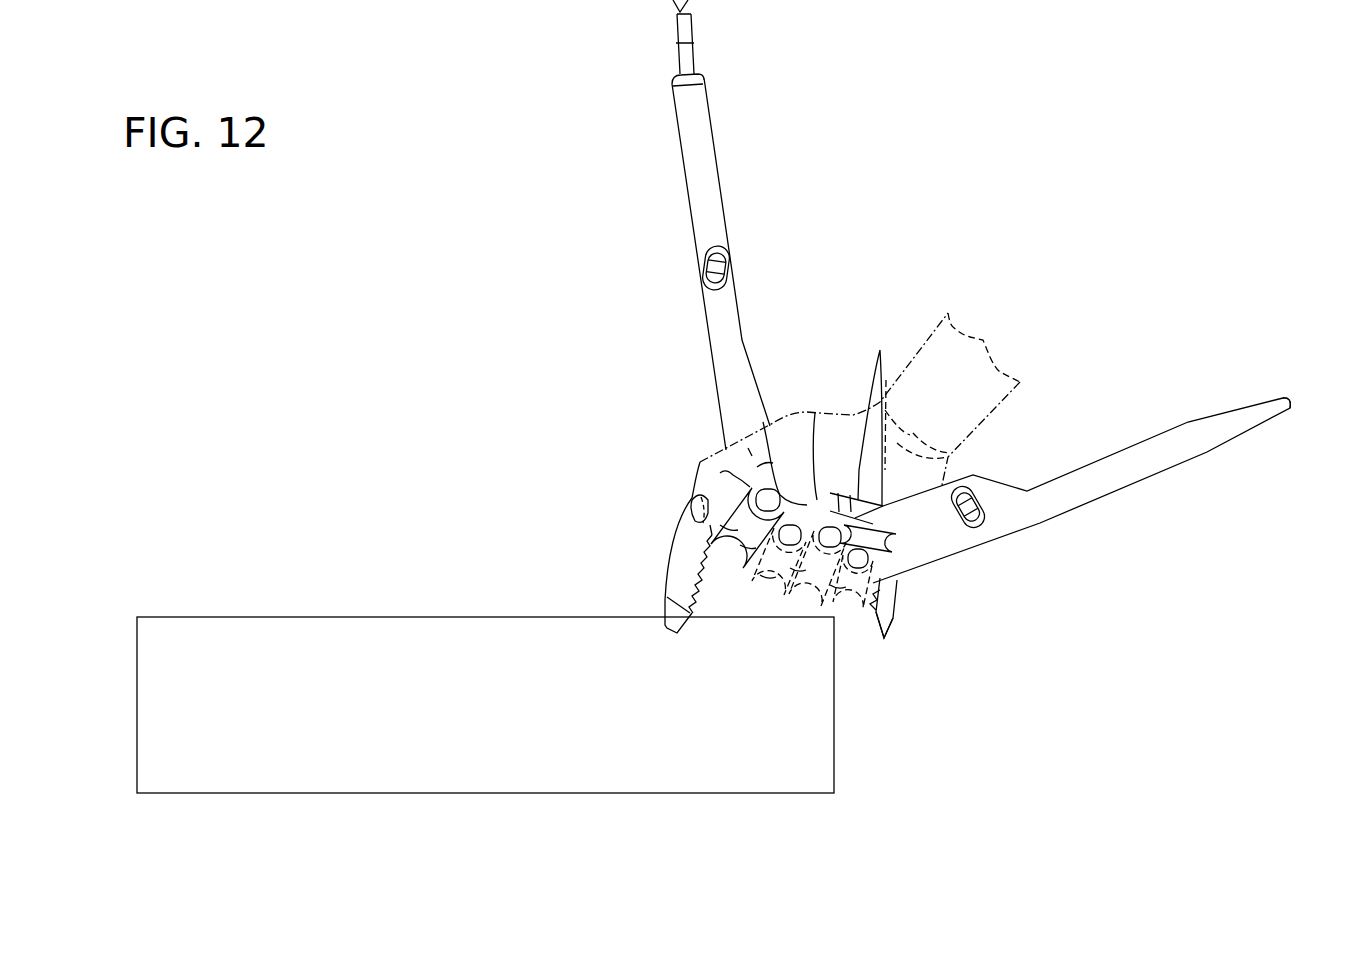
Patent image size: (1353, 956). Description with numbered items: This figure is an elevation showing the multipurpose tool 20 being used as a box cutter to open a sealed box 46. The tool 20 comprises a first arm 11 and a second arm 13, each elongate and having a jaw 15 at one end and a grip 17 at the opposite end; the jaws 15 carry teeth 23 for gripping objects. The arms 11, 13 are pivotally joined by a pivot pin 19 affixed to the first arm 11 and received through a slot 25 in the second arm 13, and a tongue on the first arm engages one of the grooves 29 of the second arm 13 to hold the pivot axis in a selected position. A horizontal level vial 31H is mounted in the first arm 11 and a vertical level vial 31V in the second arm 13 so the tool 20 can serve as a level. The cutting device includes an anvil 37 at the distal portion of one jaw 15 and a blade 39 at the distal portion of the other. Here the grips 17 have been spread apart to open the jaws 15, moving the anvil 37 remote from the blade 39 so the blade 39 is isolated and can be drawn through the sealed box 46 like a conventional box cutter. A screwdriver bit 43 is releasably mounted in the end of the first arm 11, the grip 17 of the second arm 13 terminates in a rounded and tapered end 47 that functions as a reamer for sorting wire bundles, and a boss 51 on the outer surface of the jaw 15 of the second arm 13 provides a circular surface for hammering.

The first arm 11 is at (758, 193).
The second arm 13 is at (1093, 434).
The jaw 15 is at (673, 570).
The grip 17 is at (697, 118).
The pivot pin 19 is at (815, 413).
The multipurpose tool 20 is at (924, 142).
The teeth 23 is at (704, 601).
The slot 25 is at (882, 566).
The grooves 29 is at (877, 370).
The horizontal level vial 31H is at (720, 271).
The vertical level vial 31V is at (988, 510).
The anvil 37 is at (880, 620).
The blade 39 is at (673, 603).
The screwdriver bit 43 is at (684, 22).
The sealed box 46 is at (834, 732).
The rounded and tapered end 47 is at (1293, 401).
The boss 51 is at (700, 497).